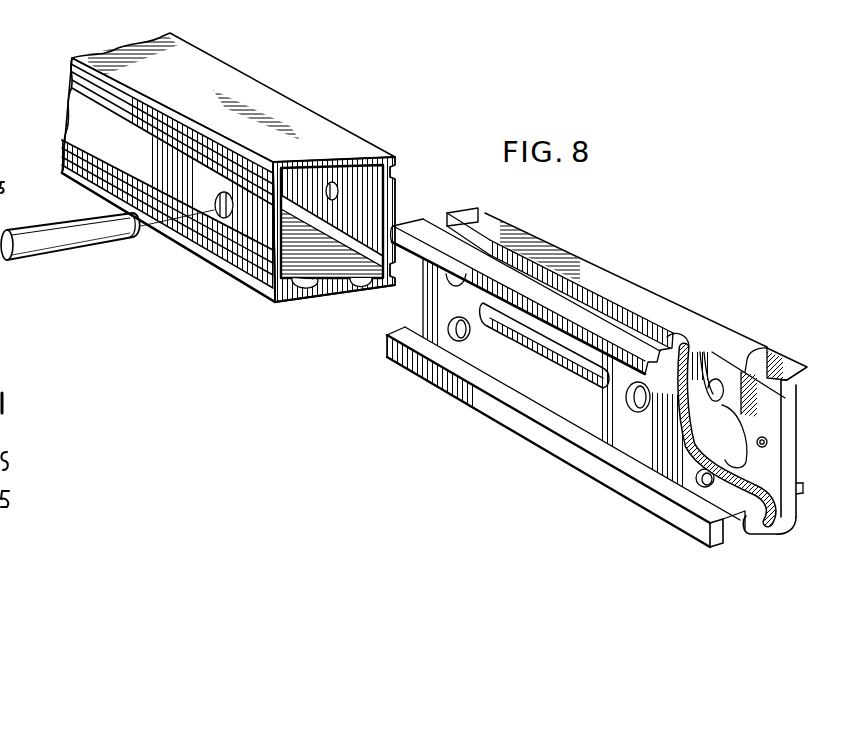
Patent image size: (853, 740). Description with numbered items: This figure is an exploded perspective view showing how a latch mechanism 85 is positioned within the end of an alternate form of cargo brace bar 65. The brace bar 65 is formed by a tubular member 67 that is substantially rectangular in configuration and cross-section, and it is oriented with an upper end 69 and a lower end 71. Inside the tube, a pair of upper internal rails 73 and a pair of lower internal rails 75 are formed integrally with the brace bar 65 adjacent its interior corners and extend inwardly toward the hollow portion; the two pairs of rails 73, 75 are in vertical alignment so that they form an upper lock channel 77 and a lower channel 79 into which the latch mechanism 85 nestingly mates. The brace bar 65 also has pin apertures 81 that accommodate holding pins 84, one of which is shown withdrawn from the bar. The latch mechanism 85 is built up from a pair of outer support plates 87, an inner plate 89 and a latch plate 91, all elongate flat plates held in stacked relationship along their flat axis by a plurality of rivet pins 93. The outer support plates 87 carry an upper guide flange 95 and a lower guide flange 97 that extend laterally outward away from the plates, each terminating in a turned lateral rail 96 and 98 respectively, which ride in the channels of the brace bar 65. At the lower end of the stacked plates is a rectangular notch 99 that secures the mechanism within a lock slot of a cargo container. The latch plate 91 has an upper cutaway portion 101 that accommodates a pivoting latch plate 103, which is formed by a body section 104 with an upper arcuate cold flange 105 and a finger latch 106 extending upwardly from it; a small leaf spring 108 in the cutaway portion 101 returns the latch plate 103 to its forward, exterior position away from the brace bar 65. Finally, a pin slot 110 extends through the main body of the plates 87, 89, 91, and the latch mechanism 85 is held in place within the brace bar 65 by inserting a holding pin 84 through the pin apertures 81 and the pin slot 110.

The cargo brace bar 65 is at (304, 96).
The tubular member 67 is at (331, 112).
The upper end 69 is at (205, 67).
The lower end 71 is at (280, 302).
The upper internal rails 73 is at (301, 162).
The lower internal rails 75 is at (316, 282).
The upper lock channel 77 is at (333, 166).
The lower channel 79 is at (308, 288).
The pin apertures 81 is at (220, 210).
The holding pins 84 is at (78, 243).
The latch mechanism 85 is at (628, 274).
The outer support plates 87 is at (472, 358).
The inner plate 89 is at (666, 336).
The latch plate 91 is at (699, 358).
The rivet pins 93 is at (449, 328).
The upper guide flange 95 is at (500, 268).
The turned lateral rail 96 is at (430, 251).
The lower guide flange 97 is at (683, 497).
The turned lateral rail 98 is at (502, 411).
The rectangular notch 99 is at (752, 537).
The upper cutaway portion 101 is at (713, 386).
The latch plate 103 is at (790, 366).
The body section 104 is at (750, 416).
The upper arcuate cold flange 105 is at (786, 398).
The finger latch 106 is at (778, 358).
The leaf spring 108 is at (718, 398).
The pin slot 110 is at (530, 327).